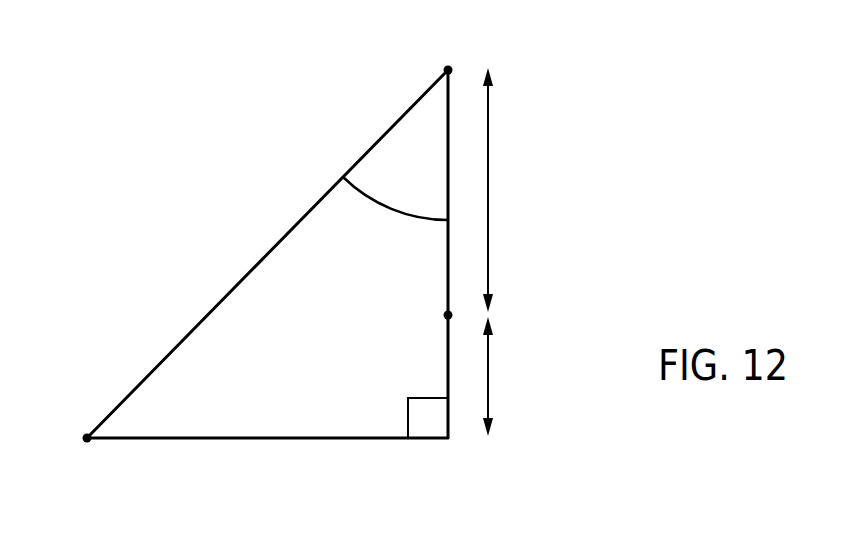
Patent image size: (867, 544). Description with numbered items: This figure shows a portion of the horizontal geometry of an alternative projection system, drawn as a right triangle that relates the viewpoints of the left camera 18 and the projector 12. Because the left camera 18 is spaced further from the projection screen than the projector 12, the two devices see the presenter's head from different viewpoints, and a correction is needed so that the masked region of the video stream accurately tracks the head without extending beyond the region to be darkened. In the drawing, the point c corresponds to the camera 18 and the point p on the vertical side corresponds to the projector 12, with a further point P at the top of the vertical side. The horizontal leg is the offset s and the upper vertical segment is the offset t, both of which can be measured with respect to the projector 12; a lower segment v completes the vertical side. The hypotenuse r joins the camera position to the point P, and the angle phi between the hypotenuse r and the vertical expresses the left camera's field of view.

The projector 12 is at (446, 311).
The left camera 18 is at (84, 435).
The point P is at (446, 67).
The radius r is at (267, 254).
The offset s is at (267, 420).
The offset t is at (499, 190).
The vertical distance v is at (502, 376).
The angle of the left camera's field of view phi is at (395, 197).